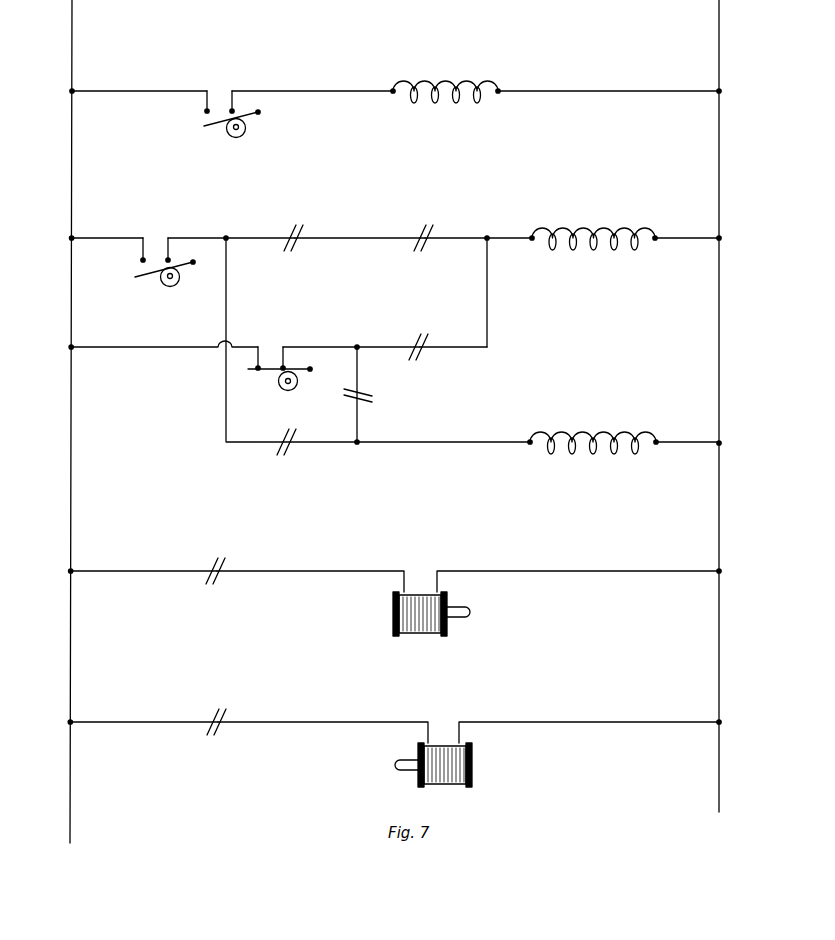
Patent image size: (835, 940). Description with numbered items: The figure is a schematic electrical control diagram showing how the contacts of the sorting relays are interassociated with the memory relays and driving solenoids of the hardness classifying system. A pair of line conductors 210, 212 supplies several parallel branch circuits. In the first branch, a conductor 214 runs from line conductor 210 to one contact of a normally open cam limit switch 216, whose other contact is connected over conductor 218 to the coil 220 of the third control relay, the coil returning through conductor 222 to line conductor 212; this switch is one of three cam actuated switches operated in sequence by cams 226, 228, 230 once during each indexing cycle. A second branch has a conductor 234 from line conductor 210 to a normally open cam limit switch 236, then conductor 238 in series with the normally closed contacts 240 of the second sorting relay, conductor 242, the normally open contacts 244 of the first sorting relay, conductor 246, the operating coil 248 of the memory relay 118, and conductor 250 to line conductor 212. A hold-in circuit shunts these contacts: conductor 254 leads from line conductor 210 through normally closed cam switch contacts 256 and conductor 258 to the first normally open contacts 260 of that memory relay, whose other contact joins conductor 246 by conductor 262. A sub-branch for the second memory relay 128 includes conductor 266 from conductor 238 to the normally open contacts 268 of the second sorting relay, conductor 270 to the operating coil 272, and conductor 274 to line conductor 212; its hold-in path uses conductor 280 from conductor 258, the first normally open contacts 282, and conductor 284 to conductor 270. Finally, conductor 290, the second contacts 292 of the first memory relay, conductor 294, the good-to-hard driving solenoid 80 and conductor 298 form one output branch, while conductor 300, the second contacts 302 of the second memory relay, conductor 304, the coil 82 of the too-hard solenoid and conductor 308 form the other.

The line conductor 210 is at (72, 52).
The line conductor 212 is at (720, 68).
The conductor 214 is at (105, 91).
The cam limit switch 216 is at (217, 40).
The conductor 218 is at (313, 91).
The coil of third control relay 220 is at (440, 80).
The conductor 222 is at (587, 91).
The cam 226 is at (246, 134).
The conductor 234 is at (92, 238).
The cam limit switch 236 is at (156, 236).
The conductor 238 is at (200, 238).
The cam 230 is at (185, 277).
The normally closed contacts of control relay CR2 240 is at (305, 226).
The conductor 242 is at (385, 242).
The normally open contacts of control relay CR1 244 is at (440, 237).
The conductor 246 is at (465, 250).
The operating coil of memory relay MR1 248 is at (585, 234).
The conductor 250 is at (712, 242).
The conductor 254 is at (172, 350).
The normally closed contacts of cam operated switch 256 is at (265, 355).
The cam 228 is at (313, 371).
The conductor 258 is at (380, 347).
The first set of contacts of memory relay MR1 260 is at (427, 355).
The conductor 262 is at (490, 328).
The conductor 266 is at (222, 380).
The normally open contacts of control relay CR2 268 is at (291, 450).
The conductor 270 is at (492, 446).
The operating coil of memory relay MR2 272 is at (580, 440).
The conductor 274 is at (712, 446).
The conductor 280 is at (360, 350).
The first set of contacts of memory relay MR2 282 is at (357, 398).
The conductor 284 is at (366, 404).
The conductor 290 is at (175, 571).
The second set of contacts of memory relay MR1 292 is at (216, 568).
The conductor 294 is at (350, 571).
The conductor 298 is at (635, 571).
The driving solenoid 80 is at (426, 638).
The conductor 300 is at (160, 724).
The second set of contacts of memory relay MR2 302 is at (212, 716).
The conductor 304 is at (346, 725).
The conductor 308 is at (574, 722).
The coil of too-hard solenoid 82 is at (472, 756).
The memory relay 118 is at (433, 345).
The memory relay 128 is at (365, 400).